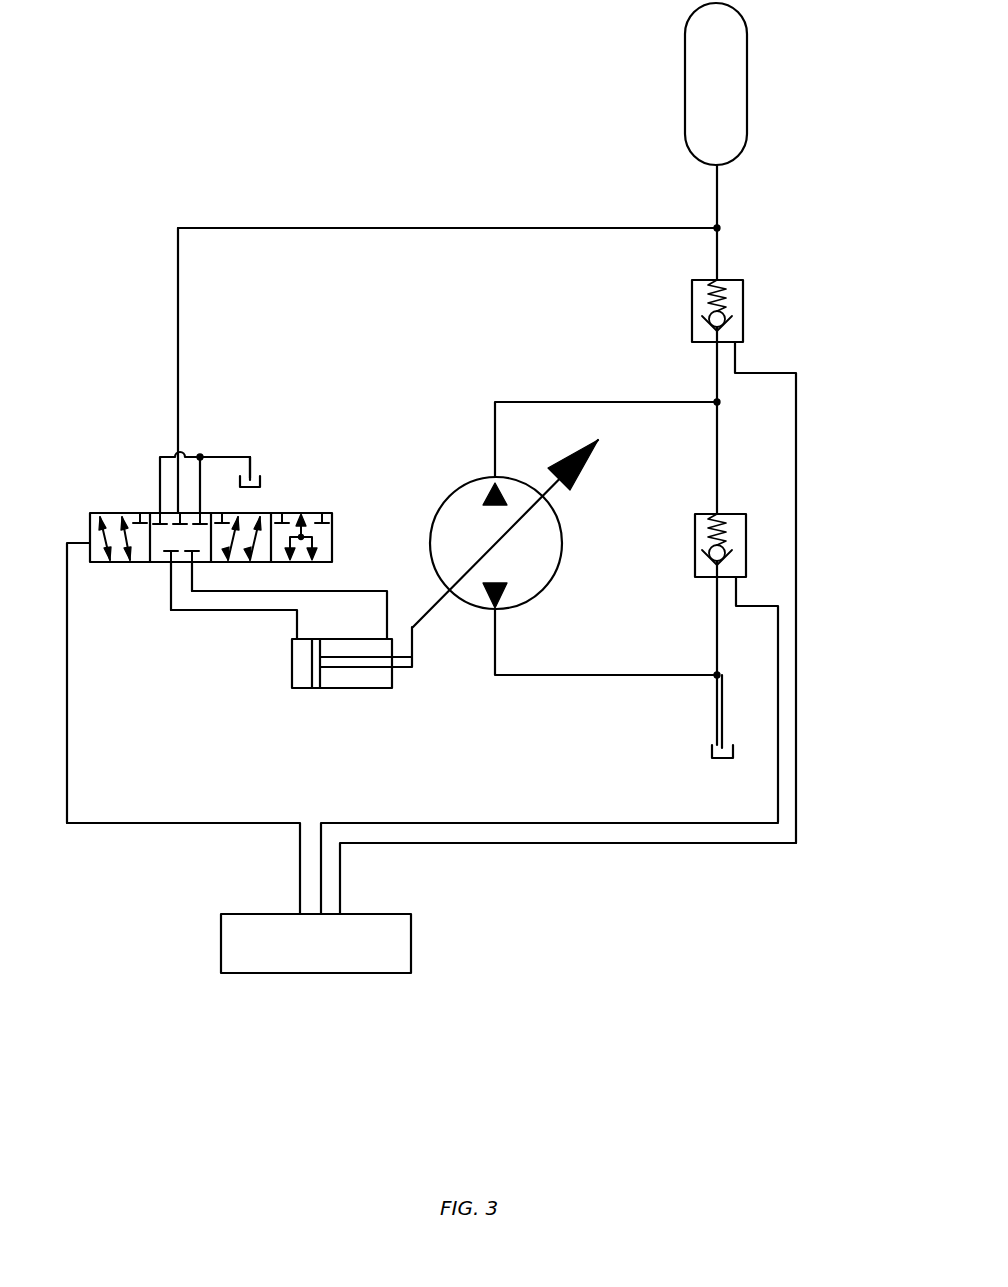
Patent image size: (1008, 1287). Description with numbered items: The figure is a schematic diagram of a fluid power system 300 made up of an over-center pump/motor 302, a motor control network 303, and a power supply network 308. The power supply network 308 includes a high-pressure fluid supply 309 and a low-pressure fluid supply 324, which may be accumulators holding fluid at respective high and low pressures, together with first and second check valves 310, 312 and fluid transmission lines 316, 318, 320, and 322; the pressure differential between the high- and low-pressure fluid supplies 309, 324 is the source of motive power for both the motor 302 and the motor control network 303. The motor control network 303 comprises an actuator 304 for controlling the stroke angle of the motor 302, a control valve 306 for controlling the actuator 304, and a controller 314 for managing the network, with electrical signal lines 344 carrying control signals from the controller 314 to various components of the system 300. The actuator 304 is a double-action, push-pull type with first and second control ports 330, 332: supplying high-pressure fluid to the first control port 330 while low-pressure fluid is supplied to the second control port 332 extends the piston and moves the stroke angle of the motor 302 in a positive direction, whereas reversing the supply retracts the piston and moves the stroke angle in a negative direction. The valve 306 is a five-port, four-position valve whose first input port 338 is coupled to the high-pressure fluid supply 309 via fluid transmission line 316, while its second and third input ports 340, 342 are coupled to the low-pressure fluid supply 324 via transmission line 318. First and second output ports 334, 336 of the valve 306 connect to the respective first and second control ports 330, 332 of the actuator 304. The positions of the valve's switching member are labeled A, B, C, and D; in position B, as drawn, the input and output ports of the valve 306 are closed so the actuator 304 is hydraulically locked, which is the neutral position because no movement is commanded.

The fluid power system 300 is at (218, 60).
The over-center pump/motor 302 is at (557, 540).
The motor control network 303 is at (322, 384).
The actuator 304 is at (360, 683).
The control valve 306 is at (118, 422).
The power supply network 308 is at (820, 210).
The high-pressure fluid supply 309 is at (733, 80).
The first check valve 310 is at (745, 304).
The second check valve 312 is at (740, 532).
The controller 314 is at (412, 940).
The fluid transmission line 316 is at (410, 227).
The fluid transmission line 318 is at (231, 456).
The fluid transmission line 320 is at (494, 425).
The fluid transmission line 322 is at (492, 655).
The low-pressure fluid supply 324 is at (253, 472).
The first control port 330 is at (293, 628).
The second control port 332 is at (392, 616).
The first output port 334 is at (165, 592).
The second output port 336 is at (195, 577).
The first input port 338 is at (160, 478).
The second input port 340 is at (160, 503).
The third input port 342 is at (203, 505).
The electrical signal lines 344 is at (138, 825).